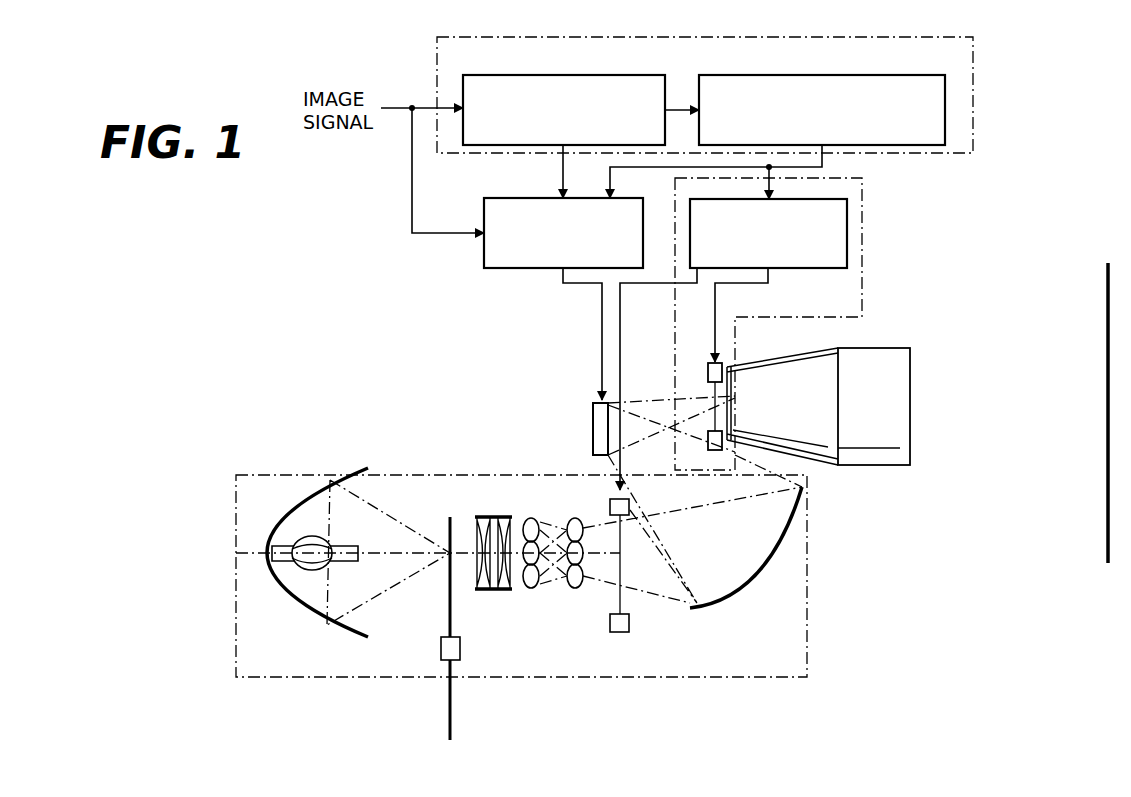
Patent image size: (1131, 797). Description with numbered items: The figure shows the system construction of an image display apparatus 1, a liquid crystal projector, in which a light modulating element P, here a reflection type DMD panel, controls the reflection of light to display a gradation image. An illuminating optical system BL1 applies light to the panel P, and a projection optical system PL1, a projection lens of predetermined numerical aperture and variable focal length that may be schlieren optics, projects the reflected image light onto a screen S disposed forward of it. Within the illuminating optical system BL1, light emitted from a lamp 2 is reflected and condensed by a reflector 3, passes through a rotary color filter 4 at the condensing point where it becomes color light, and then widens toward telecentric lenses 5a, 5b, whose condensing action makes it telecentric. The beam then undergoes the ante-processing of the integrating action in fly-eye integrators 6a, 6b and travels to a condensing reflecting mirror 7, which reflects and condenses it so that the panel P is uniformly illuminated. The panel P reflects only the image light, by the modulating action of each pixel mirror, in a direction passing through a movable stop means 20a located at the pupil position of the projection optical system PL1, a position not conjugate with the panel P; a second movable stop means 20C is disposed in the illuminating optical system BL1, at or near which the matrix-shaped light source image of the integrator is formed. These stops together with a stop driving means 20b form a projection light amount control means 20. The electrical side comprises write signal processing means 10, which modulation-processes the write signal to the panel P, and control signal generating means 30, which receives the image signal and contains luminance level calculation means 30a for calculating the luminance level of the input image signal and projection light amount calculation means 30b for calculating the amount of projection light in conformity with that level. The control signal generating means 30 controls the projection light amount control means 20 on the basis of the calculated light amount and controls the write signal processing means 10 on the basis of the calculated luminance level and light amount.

The image display apparatus 1 is at (327, 208).
The lamp 2 is at (302, 582).
The reflector 3 is at (283, 513).
The rotary color filter 4 is at (453, 703).
The telecentric lens 5a is at (474, 516).
The telecentric lens 5b is at (518, 516).
The fly-eye integrator 6a is at (531, 590).
The fly-eye integrator 6b is at (575, 590).
The condensing reflecting mirror 7 is at (755, 570).
The write signal processing means 10 is at (528, 199).
The projection light amount control means 20 is at (862, 211).
The movable stop means 20a is at (710, 366).
The stop driving means 20b is at (790, 268).
The movable stop means 20C is at (620, 632).
The control signal generating means 30 is at (973, 58).
The luminance level calculation means 30a is at (502, 73).
The projection light amount calculation means 30b is at (902, 73).
The light modulating element P is at (592, 423).
The projection optical system PL1 is at (890, 360).
The illuminating optical system BL1 is at (808, 521).
The screen S is at (1107, 282).